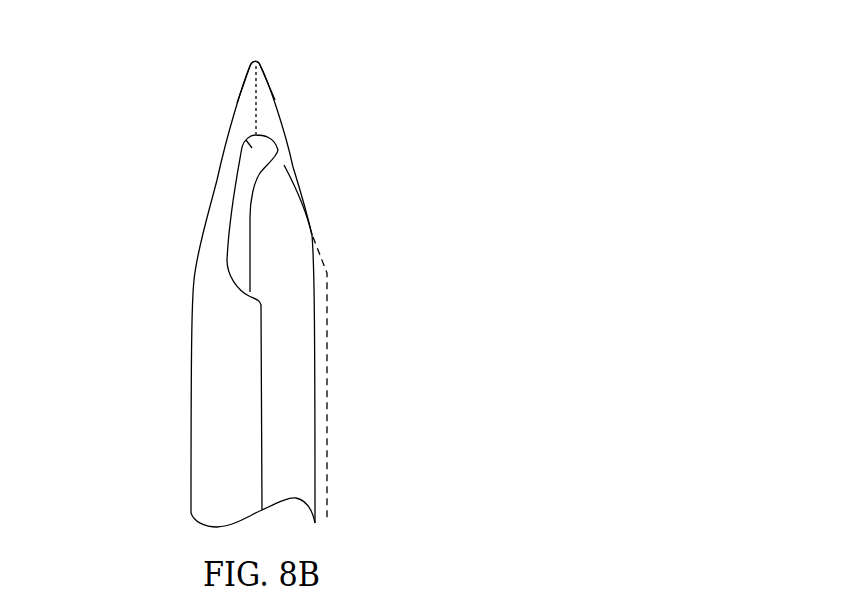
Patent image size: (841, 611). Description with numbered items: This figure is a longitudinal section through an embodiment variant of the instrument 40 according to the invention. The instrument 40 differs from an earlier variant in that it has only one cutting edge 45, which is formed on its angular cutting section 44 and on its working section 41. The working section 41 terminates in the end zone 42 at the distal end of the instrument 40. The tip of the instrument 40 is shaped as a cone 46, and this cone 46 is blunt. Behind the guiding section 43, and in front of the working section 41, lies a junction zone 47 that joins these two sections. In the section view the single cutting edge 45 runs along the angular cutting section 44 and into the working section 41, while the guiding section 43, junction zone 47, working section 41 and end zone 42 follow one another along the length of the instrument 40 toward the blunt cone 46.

The instrument 40 is at (313, 347).
The working section 41 is at (192, 387).
The end zone 42 is at (190, 248).
The guiding section 43 is at (266, 105).
The angular cutting section 44 is at (282, 167).
The cutting edge 45 is at (232, 183).
The cone 46 is at (256, 63).
The junction zone 47 is at (253, 150).